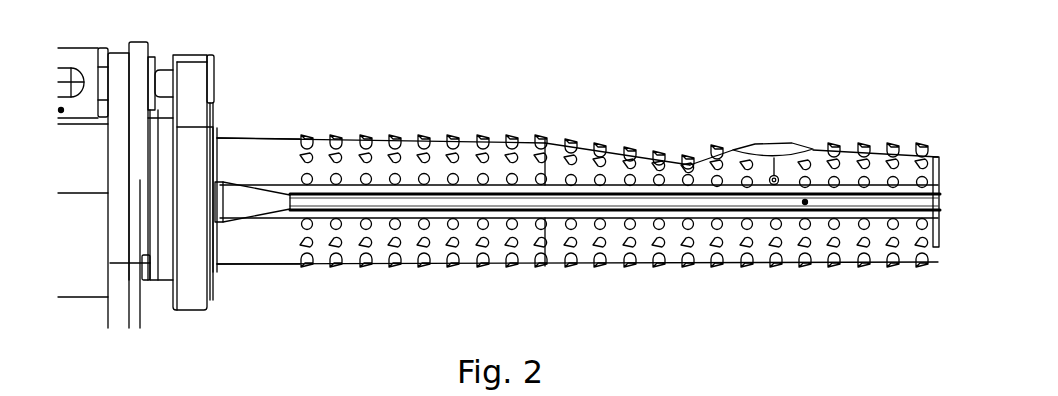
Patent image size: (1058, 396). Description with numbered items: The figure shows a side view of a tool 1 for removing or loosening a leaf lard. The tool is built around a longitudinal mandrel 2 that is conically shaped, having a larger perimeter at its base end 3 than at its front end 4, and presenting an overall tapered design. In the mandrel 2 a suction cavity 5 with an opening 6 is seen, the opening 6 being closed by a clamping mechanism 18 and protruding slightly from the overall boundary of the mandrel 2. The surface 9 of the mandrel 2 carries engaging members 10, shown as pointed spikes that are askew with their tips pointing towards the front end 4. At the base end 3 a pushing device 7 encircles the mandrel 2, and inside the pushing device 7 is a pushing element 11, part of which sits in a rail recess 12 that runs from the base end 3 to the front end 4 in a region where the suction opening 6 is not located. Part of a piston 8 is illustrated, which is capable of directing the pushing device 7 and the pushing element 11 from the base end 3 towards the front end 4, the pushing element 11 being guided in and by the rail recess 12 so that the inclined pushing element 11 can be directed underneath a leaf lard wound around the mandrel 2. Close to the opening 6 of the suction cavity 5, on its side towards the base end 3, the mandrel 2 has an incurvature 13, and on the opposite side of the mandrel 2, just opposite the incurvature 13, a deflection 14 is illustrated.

The tool 1 is at (889, 36).
The mandrel 2 is at (255, 173).
The base end 3 is at (239, 122).
The front end 4 is at (932, 134).
The suction cavity 5 is at (776, 122).
The opening 6 is at (750, 146).
The pushing device 7 is at (192, 287).
The piston 8 is at (69, 60).
The surface 9 is at (407, 155).
The engaging members 10 is at (508, 258).
The pushing element 11 is at (255, 207).
The rail recess 12 is at (758, 203).
The incurvature 13 is at (653, 140).
The deflection 14 is at (652, 281).
The clamping mechanism 18 is at (778, 150).